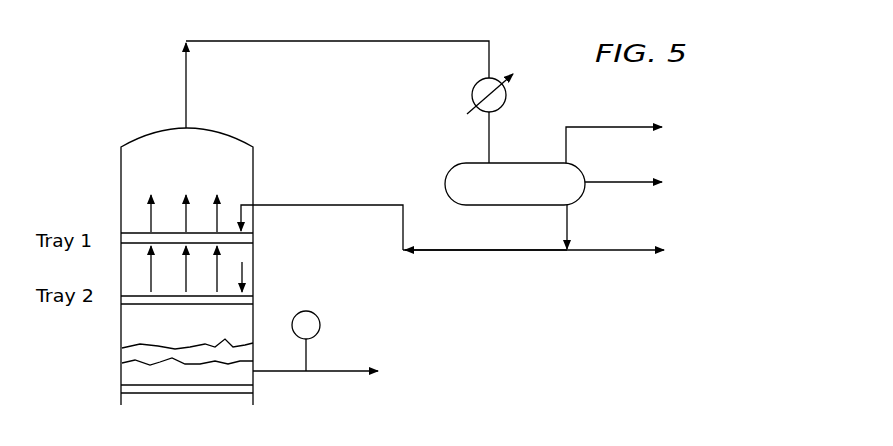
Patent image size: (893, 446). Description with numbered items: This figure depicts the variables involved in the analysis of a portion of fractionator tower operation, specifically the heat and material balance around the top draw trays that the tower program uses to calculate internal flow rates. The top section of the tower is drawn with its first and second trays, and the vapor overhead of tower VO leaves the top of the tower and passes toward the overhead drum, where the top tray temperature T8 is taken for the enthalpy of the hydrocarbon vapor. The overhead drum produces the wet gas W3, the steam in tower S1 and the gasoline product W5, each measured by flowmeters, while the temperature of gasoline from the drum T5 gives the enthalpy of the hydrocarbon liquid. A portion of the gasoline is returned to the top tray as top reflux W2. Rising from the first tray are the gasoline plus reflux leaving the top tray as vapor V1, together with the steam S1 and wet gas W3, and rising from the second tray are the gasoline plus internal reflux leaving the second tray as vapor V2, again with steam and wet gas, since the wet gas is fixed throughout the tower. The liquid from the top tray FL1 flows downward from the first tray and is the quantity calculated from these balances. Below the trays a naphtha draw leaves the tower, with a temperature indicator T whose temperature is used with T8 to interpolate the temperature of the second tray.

The vapor overhead of tower VO is at (226, 71).
The temperature of tray 1 T8 is at (349, 88).
The temperature of gasoline from drum 5 T5 is at (515, 184).
The wet gas W3 is at (679, 140).
The steam in tower S1 is at (691, 183).
The gasoline product W5 is at (598, 233).
The top reflux W2 is at (404, 217).
The gasoline plus reflux leaving tray 1 as vapor V1 is at (188, 201).
The gasoline plus internal reflux leaving tray 2 as vapor V2 is at (187, 269).
The liquid from tray 1 FL1 is at (240, 274).
The temperature indicator on naphtha draw T is at (389, 347).